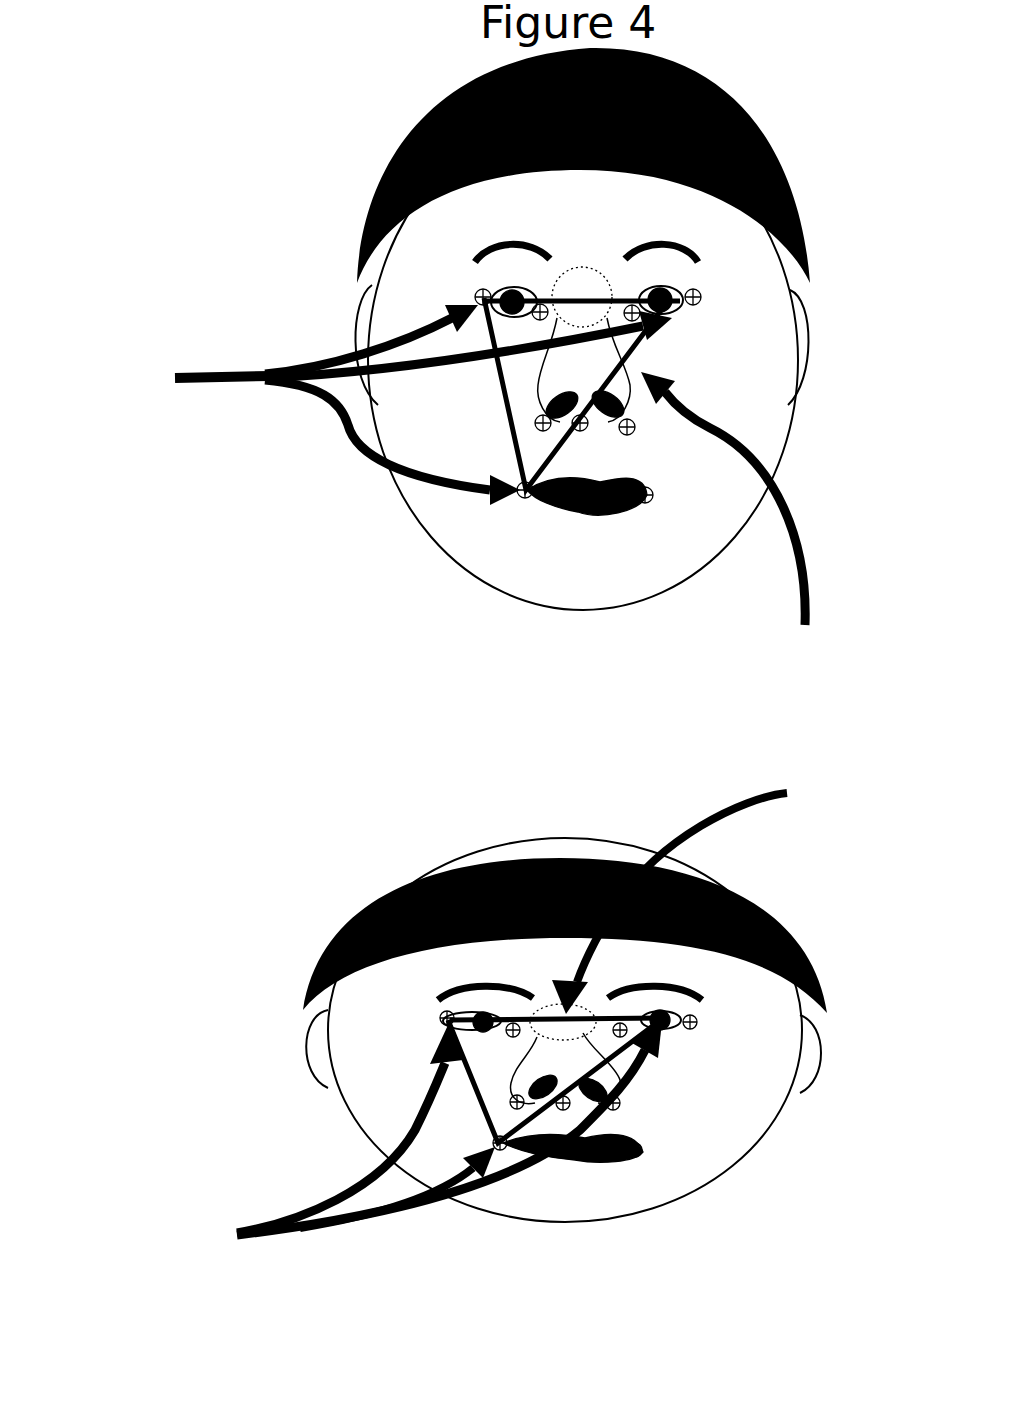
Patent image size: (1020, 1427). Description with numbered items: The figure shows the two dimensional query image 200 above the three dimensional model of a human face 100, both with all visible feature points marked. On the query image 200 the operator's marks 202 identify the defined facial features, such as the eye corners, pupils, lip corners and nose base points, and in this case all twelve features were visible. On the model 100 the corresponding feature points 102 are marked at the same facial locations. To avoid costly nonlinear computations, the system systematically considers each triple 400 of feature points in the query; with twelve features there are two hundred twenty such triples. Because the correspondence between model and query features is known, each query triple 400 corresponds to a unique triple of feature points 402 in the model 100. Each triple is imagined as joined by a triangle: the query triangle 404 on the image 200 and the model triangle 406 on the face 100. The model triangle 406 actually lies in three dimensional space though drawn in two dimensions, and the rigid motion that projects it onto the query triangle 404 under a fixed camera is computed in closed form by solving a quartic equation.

The 2D query image 200 is at (305, 188).
The feature point marks 202 is at (703, 299).
The triple of feature points 400 is at (380, 405).
The 2D query triangle 404 is at (744, 519).
The 3D model of a human face 100 is at (553, 825).
The feature points 102 is at (697, 1022).
The 3D model triangle 406 is at (704, 898).
The triple of feature points in the 3D model 402 is at (401, 1135).